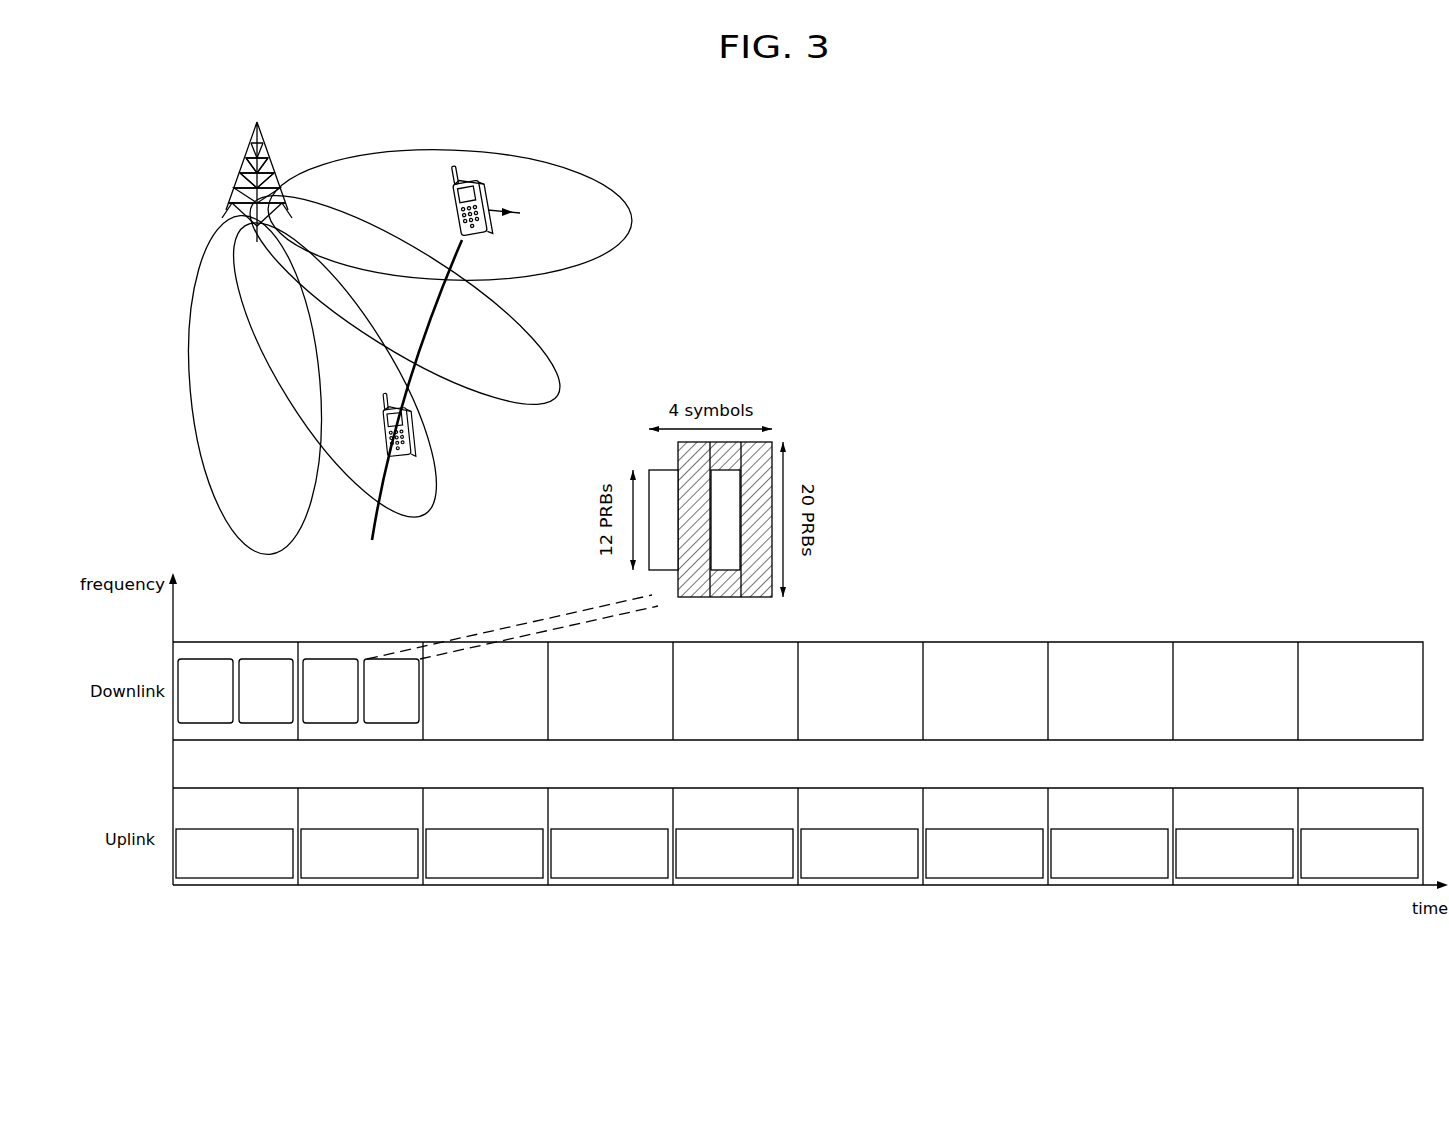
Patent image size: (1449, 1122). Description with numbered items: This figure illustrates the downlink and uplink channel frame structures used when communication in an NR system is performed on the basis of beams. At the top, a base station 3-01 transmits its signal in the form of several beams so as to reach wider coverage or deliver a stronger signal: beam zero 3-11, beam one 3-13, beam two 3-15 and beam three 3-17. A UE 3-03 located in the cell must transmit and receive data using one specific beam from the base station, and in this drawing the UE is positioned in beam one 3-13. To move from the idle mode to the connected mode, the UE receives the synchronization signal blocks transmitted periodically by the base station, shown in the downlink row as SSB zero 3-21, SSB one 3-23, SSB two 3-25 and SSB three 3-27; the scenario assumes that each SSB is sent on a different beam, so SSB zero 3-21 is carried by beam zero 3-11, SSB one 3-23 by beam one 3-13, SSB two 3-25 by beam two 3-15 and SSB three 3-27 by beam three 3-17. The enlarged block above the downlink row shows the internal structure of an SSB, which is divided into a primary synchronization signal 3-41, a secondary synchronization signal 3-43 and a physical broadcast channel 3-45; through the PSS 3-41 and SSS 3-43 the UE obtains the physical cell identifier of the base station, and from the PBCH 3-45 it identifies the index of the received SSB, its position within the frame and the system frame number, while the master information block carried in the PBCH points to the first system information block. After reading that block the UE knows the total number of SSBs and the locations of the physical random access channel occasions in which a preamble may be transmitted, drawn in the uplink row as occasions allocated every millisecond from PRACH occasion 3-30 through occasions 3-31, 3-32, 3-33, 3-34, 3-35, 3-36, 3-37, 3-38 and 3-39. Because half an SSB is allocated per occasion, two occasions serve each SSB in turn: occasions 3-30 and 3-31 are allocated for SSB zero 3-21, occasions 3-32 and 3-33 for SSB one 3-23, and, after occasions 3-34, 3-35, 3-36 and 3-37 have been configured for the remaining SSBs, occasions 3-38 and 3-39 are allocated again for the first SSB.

The base station 3-01 is at (248, 152).
The UE 3-03 is at (418, 430).
The beam #0 3-11 is at (283, 525).
The beam #1 3-13 is at (423, 495).
The beam #2 3-15 is at (543, 392).
The beam #3 3-17 is at (594, 234).
The SSB #0 3-21 is at (227, 658).
The SSB #1 3-23 is at (262, 658).
The SSB #2 3-25 is at (337, 723).
The SSB #3 3-27 is at (385, 723).
The PRACH occasion 3-30 is at (218, 878).
The PRACH occasion 3-31 is at (343, 878).
The PRACH occasion 3-32 is at (468, 878).
The PRACH occasion 3-33 is at (593, 878).
The PRACH occasion 3-34 is at (718, 878).
The PRACH occasion 3-35 is at (843, 878).
The PRACH occasion 3-36 is at (968, 878).
The PRACH occasion 3-37 is at (1093, 878).
The PRACH occasion 3-38 is at (1218, 878).
The PRACH occasion 3-39 is at (1343, 878).
The primary synchronization signal 3-41 is at (651, 470).
The secondary synchronization signal 3-43 is at (728, 562).
The PBCH (physical broadcast channel) 3-45 is at (757, 590).